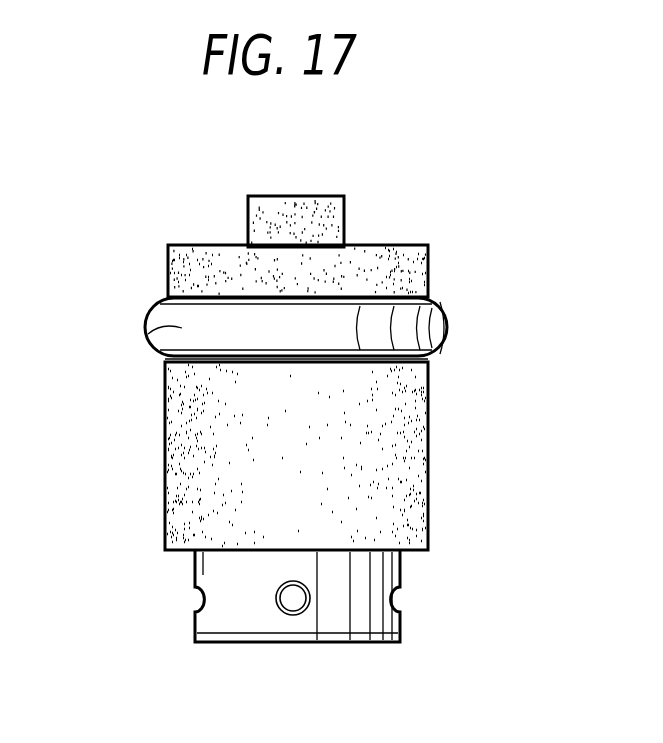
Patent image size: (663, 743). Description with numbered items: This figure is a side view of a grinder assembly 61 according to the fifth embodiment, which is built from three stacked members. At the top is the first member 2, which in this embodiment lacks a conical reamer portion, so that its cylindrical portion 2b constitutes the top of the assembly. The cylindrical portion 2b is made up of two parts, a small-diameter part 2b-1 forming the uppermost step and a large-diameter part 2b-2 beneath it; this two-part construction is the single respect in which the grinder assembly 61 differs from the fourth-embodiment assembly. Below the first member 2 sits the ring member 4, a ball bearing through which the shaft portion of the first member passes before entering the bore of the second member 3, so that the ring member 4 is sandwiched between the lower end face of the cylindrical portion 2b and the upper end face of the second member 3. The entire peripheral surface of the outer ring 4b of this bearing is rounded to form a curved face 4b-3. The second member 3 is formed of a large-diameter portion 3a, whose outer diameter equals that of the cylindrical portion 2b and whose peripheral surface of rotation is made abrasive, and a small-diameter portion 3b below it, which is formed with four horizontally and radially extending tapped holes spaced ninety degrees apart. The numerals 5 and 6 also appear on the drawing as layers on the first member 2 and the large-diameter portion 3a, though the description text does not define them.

The first member 2 is at (318, 195).
The grinder assembly 61 is at (401, 211).
The cylindrical portion 2b is at (150, 168).
The small-diameter part 2b-1 is at (247, 212).
The large-diameter part 2b-2 is at (168, 262).
The coating layer 5 is at (429, 261).
The ring member (ball bearing) 4 is at (452, 306).
The outer ring 4b is at (152, 328).
The curved face 4b-3 is at (449, 330).
The outer layer 6 is at (430, 470).
The second member 3 is at (67, 473).
The large-diameter portion 3a is at (165, 480).
The small-diameter portion 3b is at (203, 563).